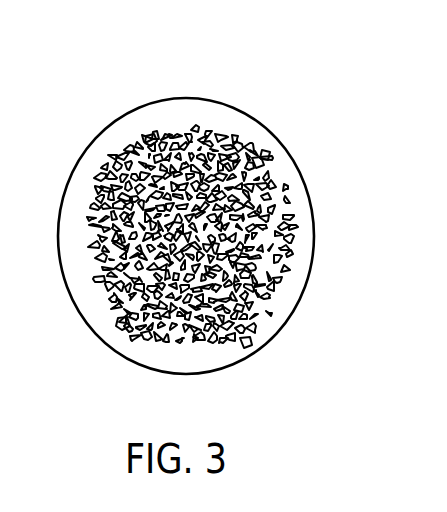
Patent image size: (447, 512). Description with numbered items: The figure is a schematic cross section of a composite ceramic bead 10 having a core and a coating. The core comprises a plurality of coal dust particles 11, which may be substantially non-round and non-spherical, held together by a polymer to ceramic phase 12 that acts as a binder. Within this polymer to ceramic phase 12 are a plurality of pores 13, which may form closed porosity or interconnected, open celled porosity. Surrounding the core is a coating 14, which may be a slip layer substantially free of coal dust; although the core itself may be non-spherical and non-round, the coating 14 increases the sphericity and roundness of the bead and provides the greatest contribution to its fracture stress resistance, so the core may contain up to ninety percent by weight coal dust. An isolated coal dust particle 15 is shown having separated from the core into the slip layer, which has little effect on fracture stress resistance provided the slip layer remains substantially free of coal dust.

The composite body / aggregate article 10 is at (101, 105).
The coal dust particles 11 is at (257, 162).
The polymer to ceramic phase 12 is at (221, 145).
The pores 13 is at (150, 140).
The coating 14 is at (305, 265).
The isolated coal dust particle 15 is at (259, 157).